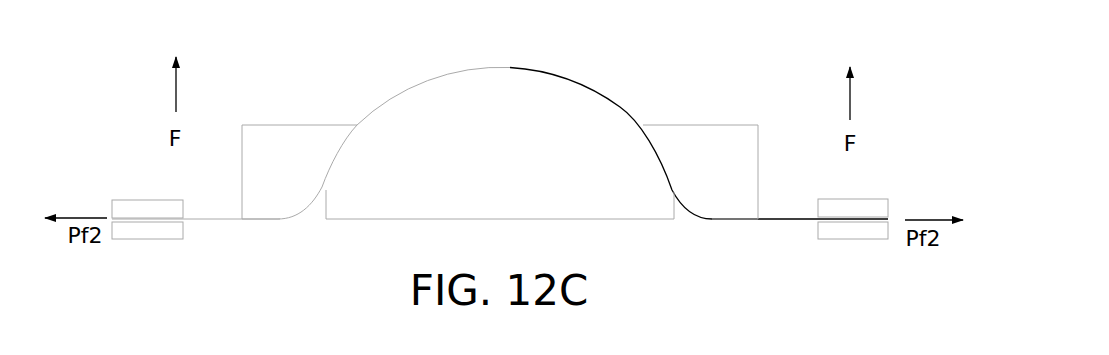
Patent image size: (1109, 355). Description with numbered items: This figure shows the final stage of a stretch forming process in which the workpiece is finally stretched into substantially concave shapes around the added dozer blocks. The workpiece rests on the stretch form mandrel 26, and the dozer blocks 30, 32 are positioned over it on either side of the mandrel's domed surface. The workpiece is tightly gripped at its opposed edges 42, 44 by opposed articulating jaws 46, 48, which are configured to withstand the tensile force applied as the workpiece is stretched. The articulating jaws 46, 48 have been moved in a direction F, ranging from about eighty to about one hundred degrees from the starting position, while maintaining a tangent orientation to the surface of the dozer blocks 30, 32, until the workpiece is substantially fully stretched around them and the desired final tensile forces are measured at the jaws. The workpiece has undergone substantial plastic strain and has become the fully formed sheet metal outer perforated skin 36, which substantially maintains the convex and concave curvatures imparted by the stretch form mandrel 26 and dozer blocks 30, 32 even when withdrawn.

The stretch form mandrel 26 is at (433, 193).
The dozer block 30 is at (283, 125).
The dozer block 32 is at (698, 123).
The fully formed sheet metal outer perforated skin 36 is at (577, 85).
The opposed edge 42 is at (155, 220).
The opposed edge 44 is at (847, 220).
The articulating jaw 46 is at (123, 198).
The articulating jaw 48 is at (875, 198).